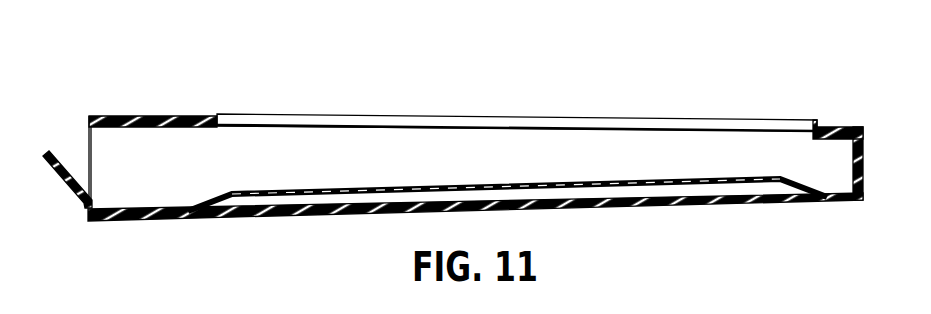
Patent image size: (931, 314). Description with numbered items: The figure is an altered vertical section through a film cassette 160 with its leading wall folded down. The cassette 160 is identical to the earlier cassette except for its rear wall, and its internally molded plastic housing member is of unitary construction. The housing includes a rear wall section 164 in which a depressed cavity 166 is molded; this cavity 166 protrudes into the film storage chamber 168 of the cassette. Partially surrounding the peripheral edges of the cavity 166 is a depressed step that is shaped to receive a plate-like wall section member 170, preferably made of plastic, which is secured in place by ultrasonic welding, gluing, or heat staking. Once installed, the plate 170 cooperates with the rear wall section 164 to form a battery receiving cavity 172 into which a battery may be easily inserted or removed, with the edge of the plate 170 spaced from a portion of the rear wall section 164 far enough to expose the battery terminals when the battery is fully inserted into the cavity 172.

The film cassette 160 is at (819, 112).
The rear wall section 164 is at (838, 200).
The depressed cavity 166 is at (618, 183).
The film storage chamber 168 is at (488, 152).
The plate-like wall section member 170 is at (642, 202).
The battery receiving cavity 172 is at (645, 192).